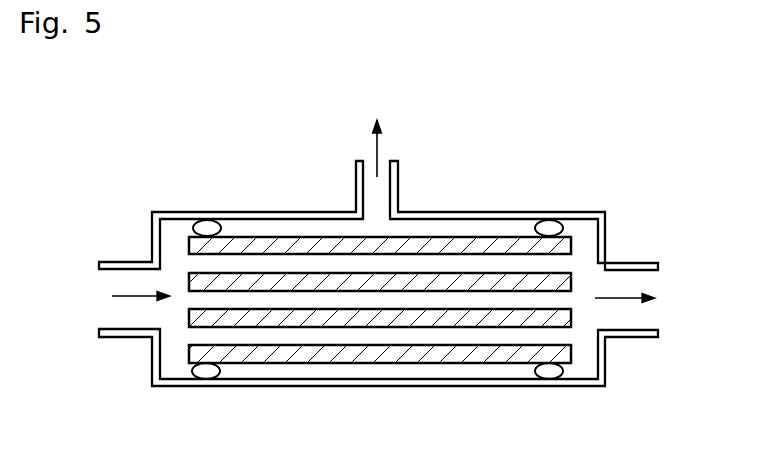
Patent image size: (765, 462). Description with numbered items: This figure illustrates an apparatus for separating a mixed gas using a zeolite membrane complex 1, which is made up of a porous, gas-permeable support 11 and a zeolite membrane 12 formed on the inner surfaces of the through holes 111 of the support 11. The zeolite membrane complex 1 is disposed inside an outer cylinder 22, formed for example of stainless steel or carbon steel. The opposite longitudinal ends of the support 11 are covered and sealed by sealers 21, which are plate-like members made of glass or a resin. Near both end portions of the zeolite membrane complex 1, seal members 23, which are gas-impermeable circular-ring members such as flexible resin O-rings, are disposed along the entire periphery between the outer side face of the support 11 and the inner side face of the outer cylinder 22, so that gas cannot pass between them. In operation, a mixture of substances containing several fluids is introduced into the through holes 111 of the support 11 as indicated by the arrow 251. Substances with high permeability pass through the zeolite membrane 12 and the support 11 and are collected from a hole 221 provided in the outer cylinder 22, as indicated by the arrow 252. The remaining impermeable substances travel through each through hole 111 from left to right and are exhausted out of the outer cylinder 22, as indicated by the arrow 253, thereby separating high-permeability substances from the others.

The zeolite membrane complex 1 is at (578, 337).
The support 11 is at (452, 360).
The through holes 111 is at (257, 299).
The zeolite membrane 12 is at (359, 292).
The sealers 21 is at (189, 247).
The outer cylinder 22 is at (497, 212).
The hole 221 is at (382, 196).
The seal members 23 is at (205, 225).
The arrow 251 is at (126, 298).
The arrow 252 is at (375, 150).
The arrow 253 is at (622, 299).